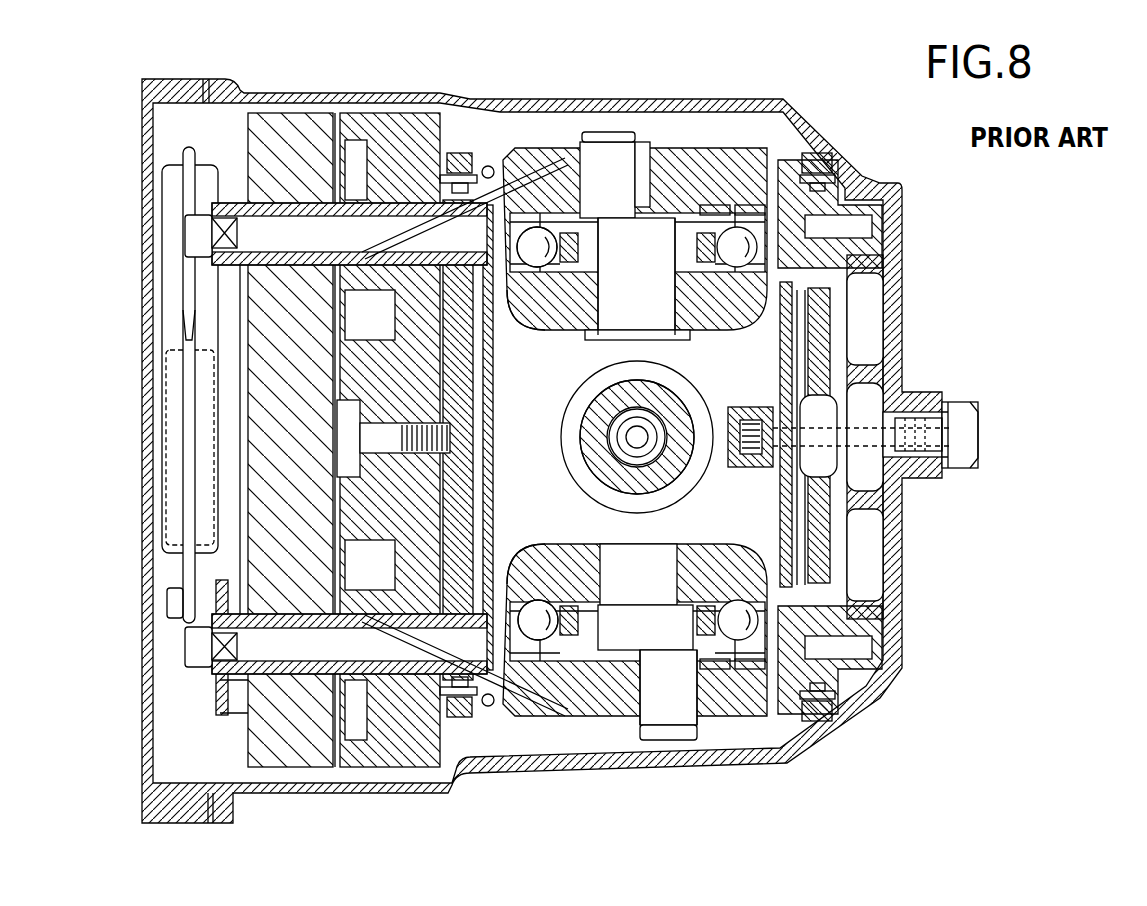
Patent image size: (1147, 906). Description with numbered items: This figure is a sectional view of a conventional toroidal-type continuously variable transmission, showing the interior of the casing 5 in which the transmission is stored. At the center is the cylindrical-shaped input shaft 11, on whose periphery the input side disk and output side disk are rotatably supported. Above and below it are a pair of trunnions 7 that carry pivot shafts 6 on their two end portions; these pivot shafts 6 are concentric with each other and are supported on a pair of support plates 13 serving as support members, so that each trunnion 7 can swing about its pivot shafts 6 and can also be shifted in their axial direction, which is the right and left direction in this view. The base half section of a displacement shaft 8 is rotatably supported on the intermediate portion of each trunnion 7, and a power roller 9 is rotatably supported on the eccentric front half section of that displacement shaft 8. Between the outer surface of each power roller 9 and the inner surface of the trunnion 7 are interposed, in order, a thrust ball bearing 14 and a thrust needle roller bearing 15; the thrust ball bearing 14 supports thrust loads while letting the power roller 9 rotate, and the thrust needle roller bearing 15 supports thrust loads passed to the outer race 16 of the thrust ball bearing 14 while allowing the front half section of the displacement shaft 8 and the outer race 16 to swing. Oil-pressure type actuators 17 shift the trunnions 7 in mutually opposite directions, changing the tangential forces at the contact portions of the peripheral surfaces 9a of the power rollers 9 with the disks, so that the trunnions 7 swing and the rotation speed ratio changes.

The casing 5 is at (272, 92).
The pivot shaft 6 is at (460, 165).
The trunnion 7 is at (695, 160).
The displacement shaft 8 is at (640, 258).
The power roller 9 is at (720, 330).
The peripheral surface 9a is at (517, 310).
The input shaft 11 is at (592, 430).
The support plate 13 is at (480, 490).
The thrust ball bearing 14 is at (530, 240).
The thrust needle roller bearing 15 is at (730, 210).
The outer race 16 is at (765, 210).
The actuator 17 is at (366, 228).